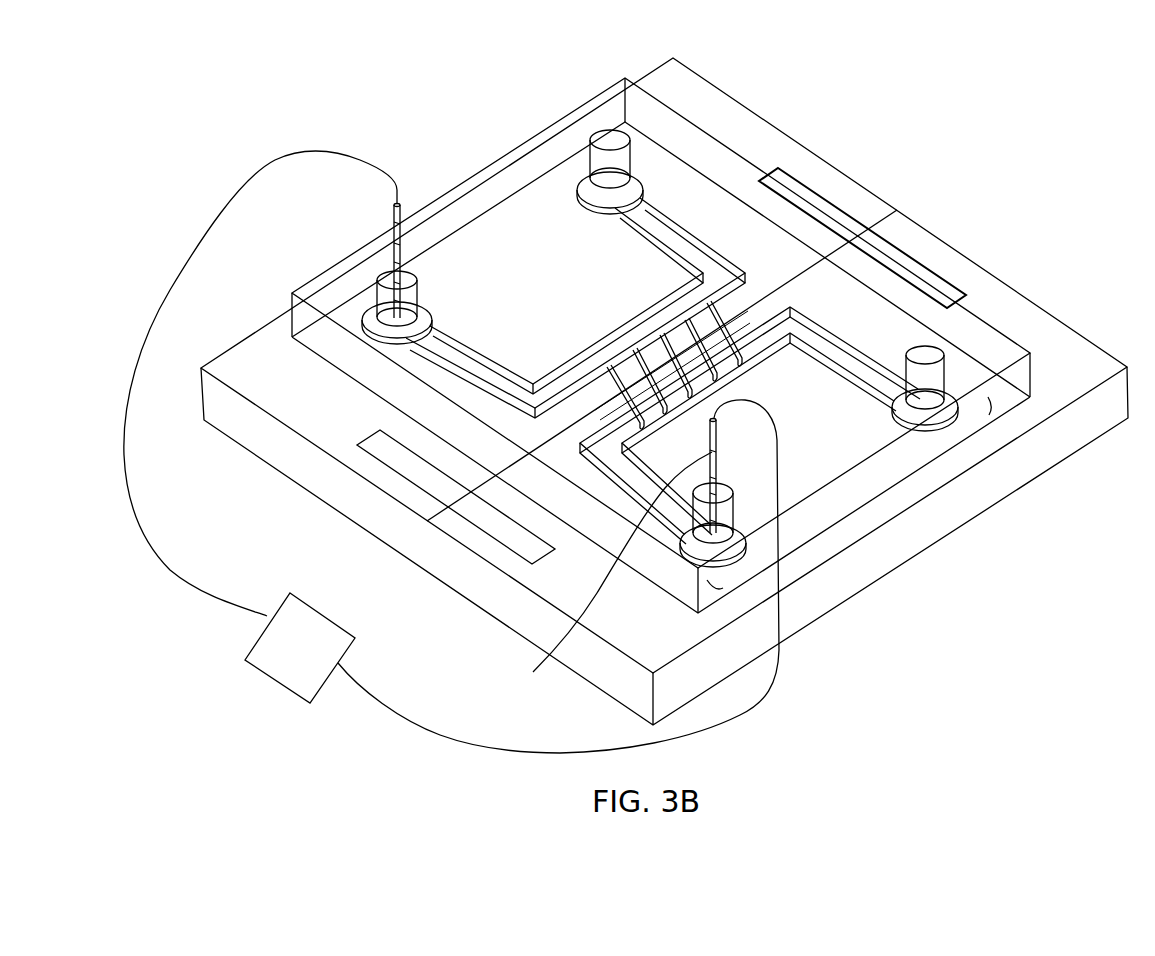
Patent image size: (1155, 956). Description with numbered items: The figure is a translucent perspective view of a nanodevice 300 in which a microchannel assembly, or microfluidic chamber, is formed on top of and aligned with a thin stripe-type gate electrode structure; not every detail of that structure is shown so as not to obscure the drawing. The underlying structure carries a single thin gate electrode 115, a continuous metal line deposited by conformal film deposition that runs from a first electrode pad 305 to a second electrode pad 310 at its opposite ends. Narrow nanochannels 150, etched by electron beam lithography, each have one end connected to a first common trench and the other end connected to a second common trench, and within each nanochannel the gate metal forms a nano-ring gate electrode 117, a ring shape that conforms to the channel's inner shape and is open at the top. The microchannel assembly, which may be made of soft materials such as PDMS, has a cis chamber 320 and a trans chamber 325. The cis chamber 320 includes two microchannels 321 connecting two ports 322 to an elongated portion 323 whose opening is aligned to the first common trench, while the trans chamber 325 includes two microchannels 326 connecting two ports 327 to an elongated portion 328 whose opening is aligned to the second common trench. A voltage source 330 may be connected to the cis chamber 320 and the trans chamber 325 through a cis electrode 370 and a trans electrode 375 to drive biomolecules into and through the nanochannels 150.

The nanodevice 300 is at (1042, 197).
The second electrode pad 310 is at (900, 255).
The first electrode pad 305 is at (373, 445).
The single thin gate electrode 115 is at (793, 285).
The cis chamber 320 is at (465, 168).
The trans chamber 325 is at (860, 507).
The microchannels 321 is at (643, 203).
The ports 322 is at (620, 138).
The elongated portion 323 is at (610, 327).
The microchannels 326 is at (845, 355).
The ports 327 is at (930, 352).
The elongated portion 328 is at (727, 395).
The nanochannels 150 is at (697, 328).
The nano-ring gate electrode 117 is at (603, 390).
The cis electrode 370 is at (397, 222).
The trans electrode 375 is at (545, 650).
The voltage source 330 is at (290, 680).